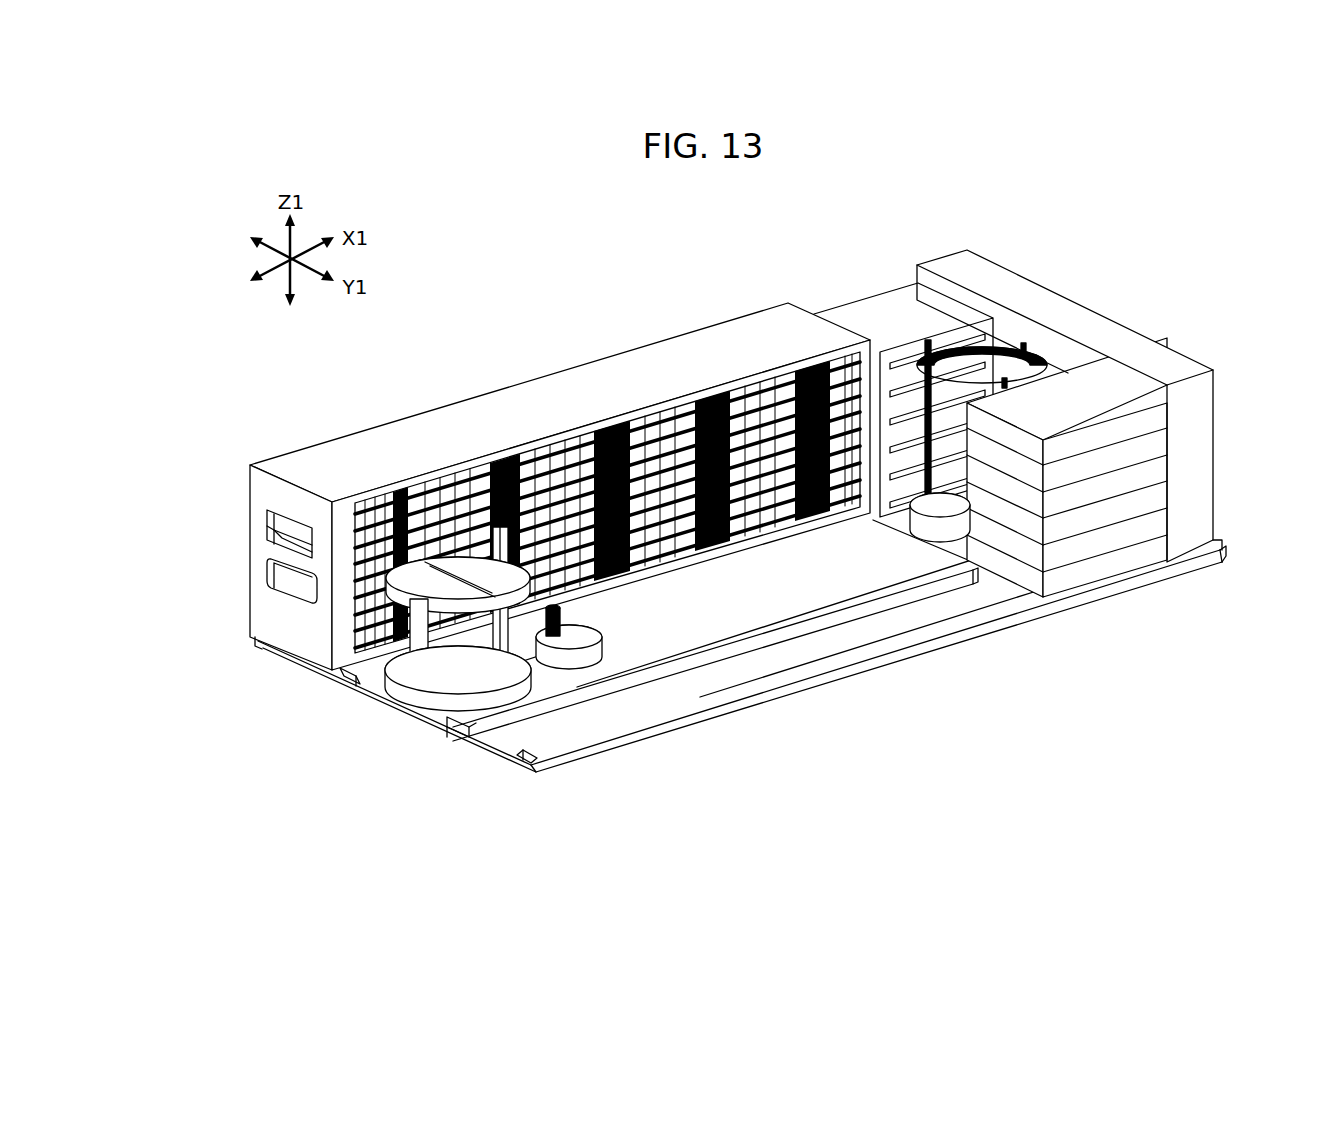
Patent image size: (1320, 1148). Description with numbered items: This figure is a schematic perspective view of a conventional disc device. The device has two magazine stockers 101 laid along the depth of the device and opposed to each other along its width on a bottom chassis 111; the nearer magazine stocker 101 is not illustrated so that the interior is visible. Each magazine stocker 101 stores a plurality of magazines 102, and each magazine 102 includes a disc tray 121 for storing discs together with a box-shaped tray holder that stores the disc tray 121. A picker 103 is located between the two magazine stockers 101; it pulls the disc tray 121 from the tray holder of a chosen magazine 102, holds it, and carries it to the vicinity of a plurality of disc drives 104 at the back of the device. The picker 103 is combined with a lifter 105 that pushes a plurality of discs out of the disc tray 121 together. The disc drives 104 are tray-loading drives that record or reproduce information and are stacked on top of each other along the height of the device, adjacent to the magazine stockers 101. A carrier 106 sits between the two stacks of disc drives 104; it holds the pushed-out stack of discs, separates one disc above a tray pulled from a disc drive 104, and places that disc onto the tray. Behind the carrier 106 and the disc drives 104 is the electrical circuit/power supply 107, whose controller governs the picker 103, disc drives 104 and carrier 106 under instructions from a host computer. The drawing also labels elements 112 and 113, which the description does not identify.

The magazine stocker 101 is at (345, 458).
The magazine 102 is at (740, 540).
The picker 103 is at (407, 700).
The disc drive 104 is at (887, 308).
The lifter 105 is at (597, 640).
The carrier 106 is at (1010, 347).
The electrical circuit/power supply 107 is at (1090, 322).
The bottom chassis 111 is at (700, 648).
The bracket 112 is at (356, 676).
The opening 113 is at (278, 568).
The disc tray 121 is at (735, 545).